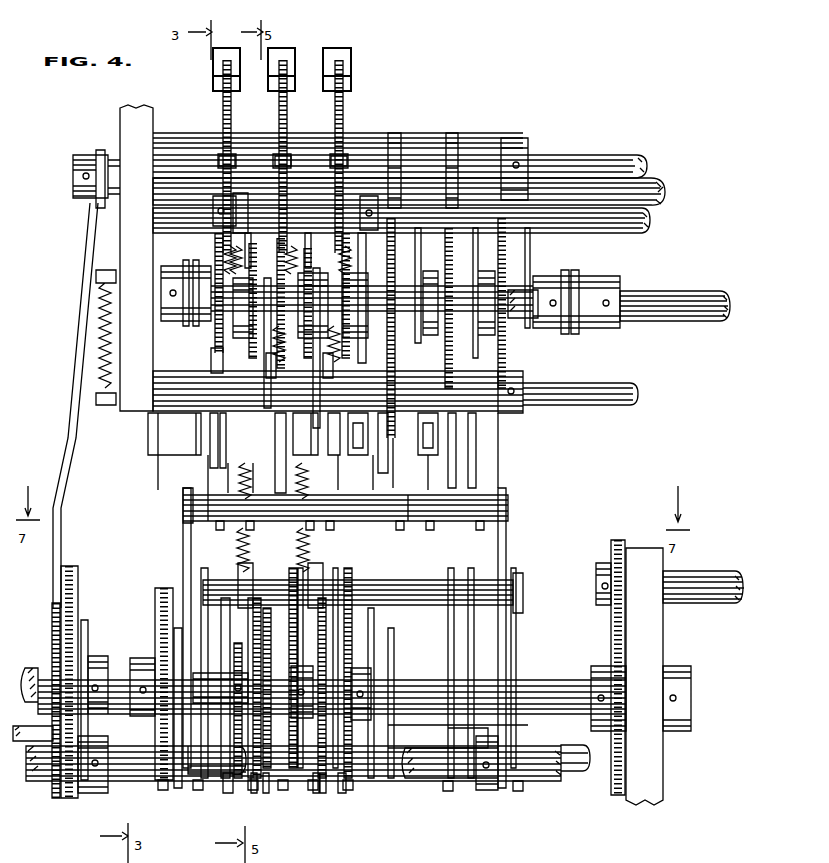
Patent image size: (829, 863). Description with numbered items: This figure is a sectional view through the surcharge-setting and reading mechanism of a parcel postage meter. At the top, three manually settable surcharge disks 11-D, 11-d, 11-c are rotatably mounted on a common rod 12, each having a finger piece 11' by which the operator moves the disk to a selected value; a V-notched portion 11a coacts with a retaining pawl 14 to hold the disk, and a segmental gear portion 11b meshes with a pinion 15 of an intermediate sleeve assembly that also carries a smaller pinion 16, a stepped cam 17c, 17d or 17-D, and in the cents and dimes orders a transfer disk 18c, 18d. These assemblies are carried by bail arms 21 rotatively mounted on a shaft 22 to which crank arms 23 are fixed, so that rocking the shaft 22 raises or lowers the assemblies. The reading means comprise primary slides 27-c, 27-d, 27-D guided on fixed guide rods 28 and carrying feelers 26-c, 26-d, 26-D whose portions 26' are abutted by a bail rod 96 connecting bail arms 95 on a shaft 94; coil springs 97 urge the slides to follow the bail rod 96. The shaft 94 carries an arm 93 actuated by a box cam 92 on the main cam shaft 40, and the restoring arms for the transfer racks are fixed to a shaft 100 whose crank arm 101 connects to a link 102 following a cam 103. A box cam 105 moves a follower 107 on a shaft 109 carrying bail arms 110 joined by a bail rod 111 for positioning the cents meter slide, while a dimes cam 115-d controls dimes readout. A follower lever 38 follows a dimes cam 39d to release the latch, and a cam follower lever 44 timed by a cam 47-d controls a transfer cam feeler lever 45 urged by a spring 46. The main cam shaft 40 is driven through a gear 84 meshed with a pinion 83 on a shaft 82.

The finger piece 11' is at (289, 58).
The cents surcharge disk 11-c is at (222, 98).
The dimes surcharge disk 11-d is at (279, 98).
The dollars surcharge disk 11-D is at (335, 98).
The V-notched portion 11a is at (224, 117).
The segmental gear portion 11b is at (210, 226).
The common rod 12 is at (585, 147).
The retaining pawl 14 is at (223, 158).
The pinion 15 is at (212, 250).
The smaller pinion 16 is at (209, 260).
The cents order stepped cam 17c is at (263, 250).
The cents order transfer disk 18c is at (256, 327).
The dimes order stepped cam 17d is at (320, 250).
The dimes order transfer disk 18d is at (310, 337).
The dollars order stepped cam 17-D is at (366, 298).
The transfer cam feeler lever 45 is at (330, 272).
The spring 46 is at (336, 342).
The bail arms 21 is at (178, 290).
The shaft 22 is at (640, 283).
The crank arms 23 is at (178, 262).
The cents order primary slide 27-c is at (203, 348).
The dimes order primary slide 27-d is at (258, 372).
The dollars order primary slide 27-D is at (356, 380).
The guide rods 28 is at (593, 376).
The cents order feeler 26-c is at (140, 448).
The dimes order feeler 26-d is at (196, 448).
The dollars order feeler 26-D is at (277, 433).
The feeler portions 26' is at (328, 506).
The coil springs 97 is at (192, 515).
The bail rod 96 is at (402, 516).
The bail arms 95 is at (176, 548).
The bail arms 110 is at (190, 587).
The bail rod 111 is at (394, 575).
The follower lever 38 is at (238, 556).
The cam follower lever 44 is at (238, 530).
The link 102 is at (51, 492).
The shaft 100 is at (66, 170).
The crank arm 101 is at (93, 142).
The box cam 92 is at (71, 586).
The arm 93 is at (81, 618).
The cam 103 is at (45, 612).
The box cam 105 is at (146, 588).
The follower 107 is at (166, 628).
The main cam shaft 40 is at (520, 676).
The shaft 94 is at (116, 767).
The shaft 109 is at (116, 767).
The dimes order cam 39d is at (225, 788).
The dimes order cam 115-d is at (251, 788).
The dimes order cam 47-d is at (255, 784).
The pinion 83 is at (602, 546).
The gear 84 is at (600, 631).
The shaft 82 is at (675, 568).